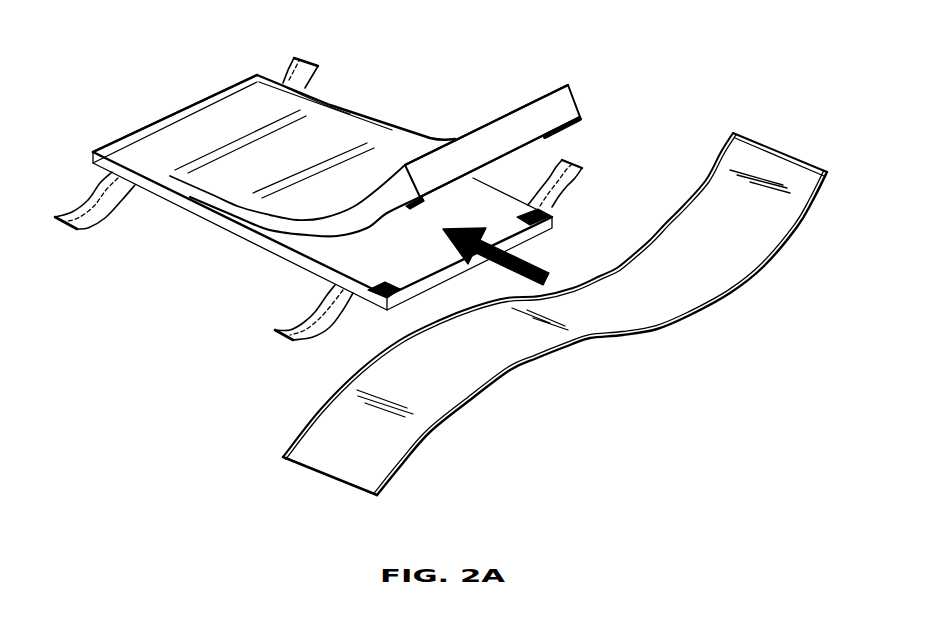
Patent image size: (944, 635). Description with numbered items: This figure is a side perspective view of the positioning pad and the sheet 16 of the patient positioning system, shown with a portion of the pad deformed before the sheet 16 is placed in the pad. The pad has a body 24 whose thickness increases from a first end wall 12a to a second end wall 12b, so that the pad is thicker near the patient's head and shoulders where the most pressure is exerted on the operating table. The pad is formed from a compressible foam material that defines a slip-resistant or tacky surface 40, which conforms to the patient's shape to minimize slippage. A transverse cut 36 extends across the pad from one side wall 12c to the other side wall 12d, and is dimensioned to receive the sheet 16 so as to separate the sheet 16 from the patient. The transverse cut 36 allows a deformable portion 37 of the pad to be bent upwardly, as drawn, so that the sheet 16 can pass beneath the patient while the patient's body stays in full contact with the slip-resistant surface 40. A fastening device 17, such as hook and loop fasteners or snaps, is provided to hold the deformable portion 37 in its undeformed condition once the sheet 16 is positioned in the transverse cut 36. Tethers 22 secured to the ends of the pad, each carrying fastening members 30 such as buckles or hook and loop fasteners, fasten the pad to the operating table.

The first end wall 12a is at (141, 129).
The second end wall 12b is at (432, 276).
The side wall 12c is at (158, 189).
The side wall 12d is at (366, 111).
The sheet 16 is at (617, 341).
The fastening device 17 is at (384, 280).
The tethers 22 is at (67, 232).
The body 24 is at (325, 93).
The fastening members 30 is at (83, 202).
The transverse cut 36 is at (227, 227).
The deformable portion 37 is at (293, 228).
The slip-resistant surface 40 is at (215, 103).